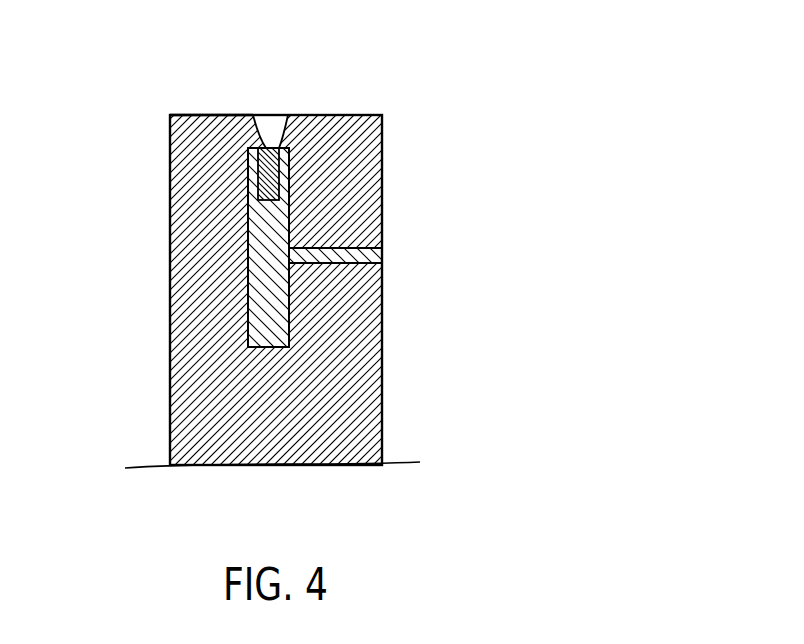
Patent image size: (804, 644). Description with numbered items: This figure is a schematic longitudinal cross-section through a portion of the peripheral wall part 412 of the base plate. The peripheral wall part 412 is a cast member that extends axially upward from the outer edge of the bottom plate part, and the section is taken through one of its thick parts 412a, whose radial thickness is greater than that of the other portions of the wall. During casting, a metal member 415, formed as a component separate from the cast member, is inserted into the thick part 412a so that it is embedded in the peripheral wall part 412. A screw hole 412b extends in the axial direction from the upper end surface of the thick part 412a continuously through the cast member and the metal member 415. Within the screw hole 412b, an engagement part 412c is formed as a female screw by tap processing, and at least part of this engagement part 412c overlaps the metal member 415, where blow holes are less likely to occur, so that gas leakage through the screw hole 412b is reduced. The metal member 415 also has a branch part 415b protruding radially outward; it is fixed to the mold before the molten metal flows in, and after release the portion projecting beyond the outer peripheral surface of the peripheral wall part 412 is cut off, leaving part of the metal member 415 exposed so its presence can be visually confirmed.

The peripheral wall part 412 is at (238, 298).
The thick part 412a is at (207, 115).
The screw hole 412b is at (275, 117).
The engagement part 412c is at (280, 148).
The metal member 415 is at (247, 252).
The branch part 415b is at (343, 258).